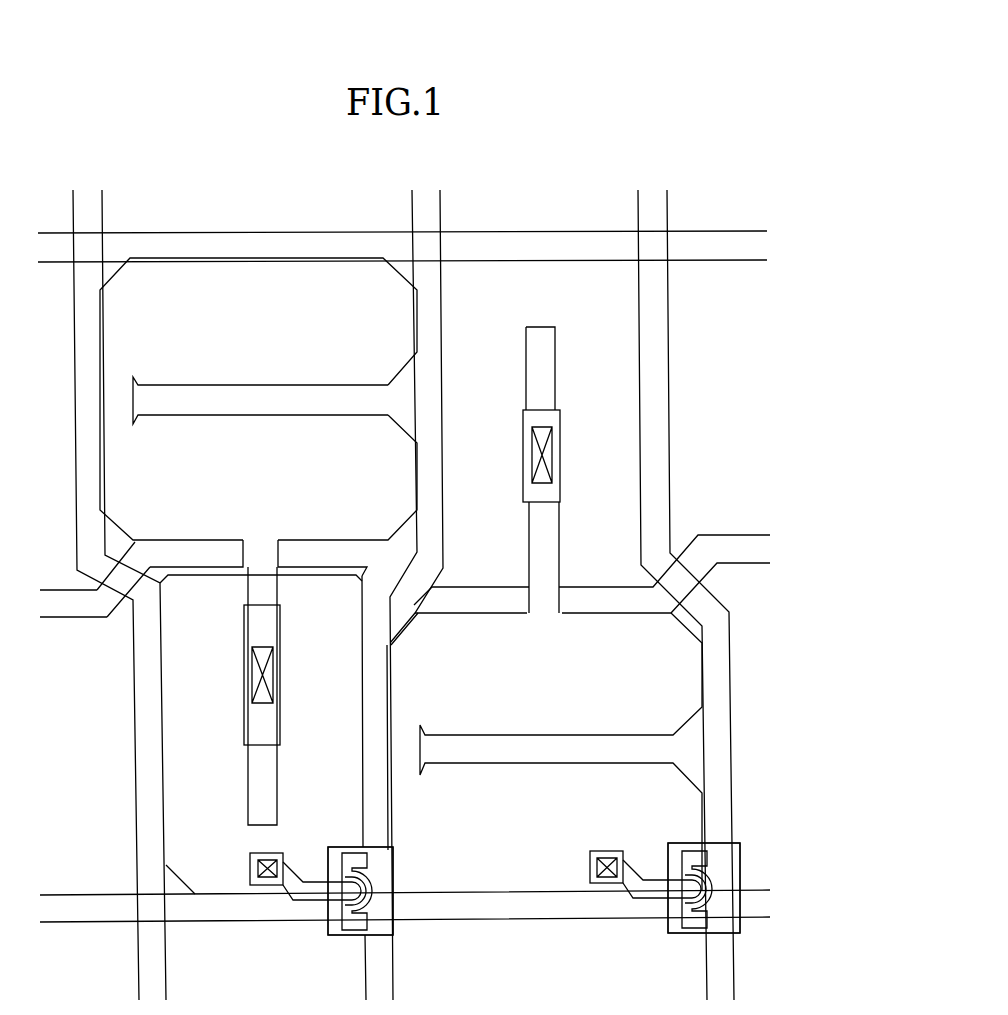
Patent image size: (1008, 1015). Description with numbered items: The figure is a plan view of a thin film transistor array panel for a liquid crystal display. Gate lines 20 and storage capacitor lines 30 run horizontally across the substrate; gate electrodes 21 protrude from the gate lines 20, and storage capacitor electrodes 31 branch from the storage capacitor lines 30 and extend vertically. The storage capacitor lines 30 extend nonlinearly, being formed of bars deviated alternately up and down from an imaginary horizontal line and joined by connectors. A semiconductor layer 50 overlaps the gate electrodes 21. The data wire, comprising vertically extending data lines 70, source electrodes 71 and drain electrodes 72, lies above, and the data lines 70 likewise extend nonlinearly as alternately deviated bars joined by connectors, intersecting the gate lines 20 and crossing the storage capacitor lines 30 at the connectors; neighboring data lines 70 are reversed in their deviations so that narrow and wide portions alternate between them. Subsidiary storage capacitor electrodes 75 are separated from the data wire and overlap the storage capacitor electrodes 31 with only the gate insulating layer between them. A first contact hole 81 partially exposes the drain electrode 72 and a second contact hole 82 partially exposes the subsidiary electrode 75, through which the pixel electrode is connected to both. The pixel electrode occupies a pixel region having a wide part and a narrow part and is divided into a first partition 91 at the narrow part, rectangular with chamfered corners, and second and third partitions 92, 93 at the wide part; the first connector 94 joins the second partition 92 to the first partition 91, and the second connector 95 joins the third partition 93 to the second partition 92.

The gate line 20 is at (497, 916).
The gate electrode 21 is at (398, 843).
The storage capacitor line 30 is at (262, 538).
The storage capacitor electrode 31 is at (277, 775).
The semiconductor layer 50 is at (333, 936).
The data line 70 is at (392, 678).
The source electrode 71 is at (357, 925).
The drain electrode 72 is at (268, 886).
The subsidiary storage capacitor electrode 75 is at (282, 640).
The first contact hole 81 is at (281, 851).
The second contact hole 82 is at (280, 680).
The first partition 91 is at (158, 755).
The second partition 92 is at (175, 478).
The third partition 93 is at (175, 318).
The first connector 94 is at (193, 590).
The second connector 95 is at (112, 405).